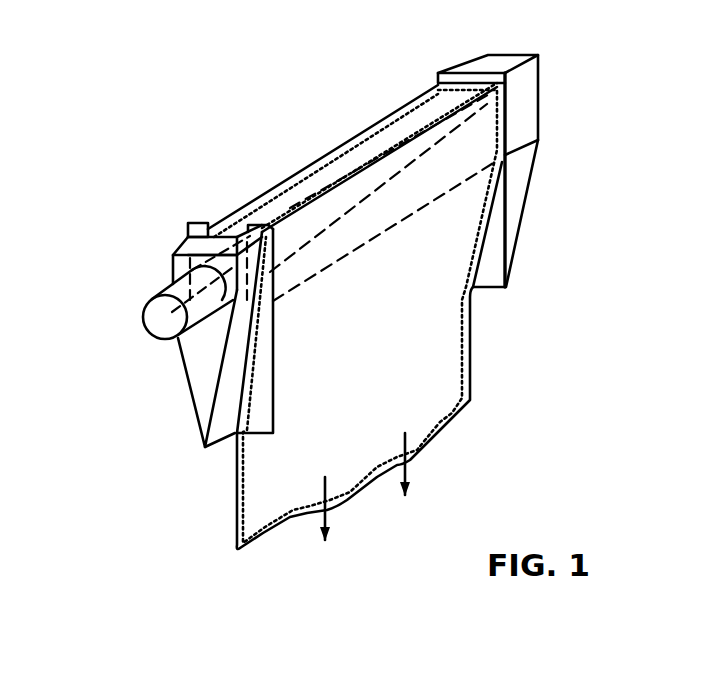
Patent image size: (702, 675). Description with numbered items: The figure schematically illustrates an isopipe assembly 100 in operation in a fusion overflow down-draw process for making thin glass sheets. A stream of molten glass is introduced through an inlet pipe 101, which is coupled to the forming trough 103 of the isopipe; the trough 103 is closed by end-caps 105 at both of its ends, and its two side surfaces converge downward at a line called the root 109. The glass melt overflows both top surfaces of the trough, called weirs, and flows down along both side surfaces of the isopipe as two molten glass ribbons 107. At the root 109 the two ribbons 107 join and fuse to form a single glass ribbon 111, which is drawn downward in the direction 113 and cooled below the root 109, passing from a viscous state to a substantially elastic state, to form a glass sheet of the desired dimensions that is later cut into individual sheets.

The isopipe assembly 100 is at (580, 119).
The inlet pipe 101 is at (172, 321).
The forming trough 103 is at (316, 230).
The end-caps 105 is at (524, 232).
The molten glass ribbons 107 is at (402, 281).
The root 109 is at (226, 441).
The glass ribbon 111 is at (298, 492).
The drawing direction 113 is at (413, 468).